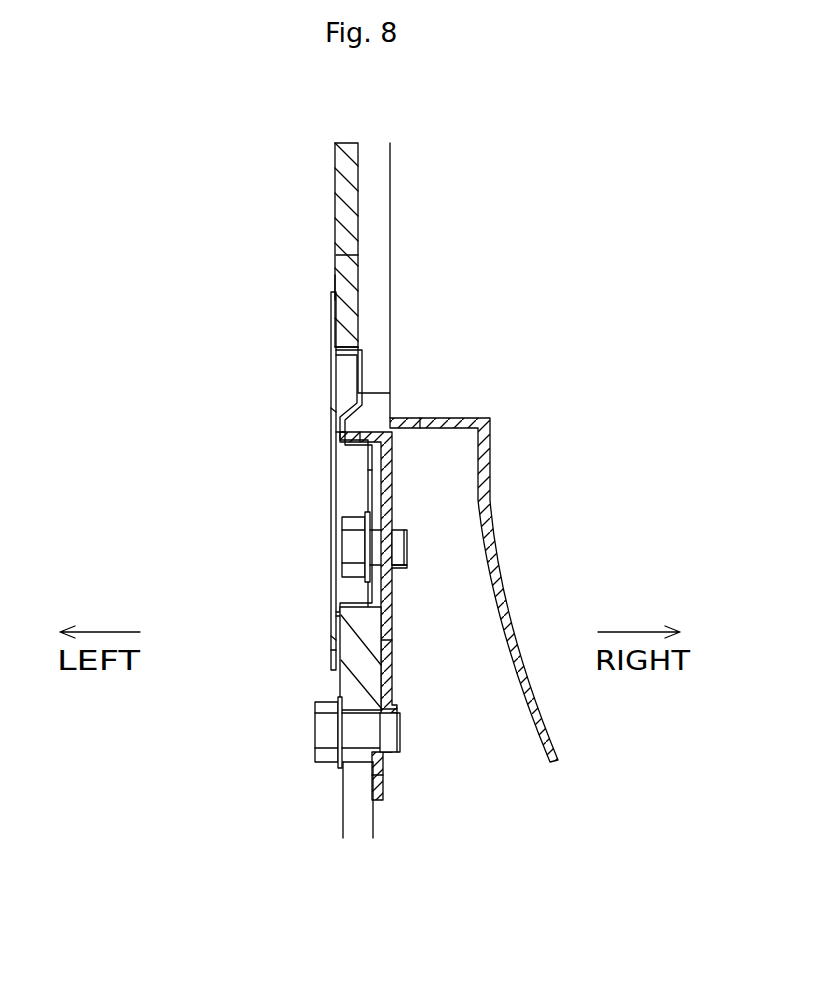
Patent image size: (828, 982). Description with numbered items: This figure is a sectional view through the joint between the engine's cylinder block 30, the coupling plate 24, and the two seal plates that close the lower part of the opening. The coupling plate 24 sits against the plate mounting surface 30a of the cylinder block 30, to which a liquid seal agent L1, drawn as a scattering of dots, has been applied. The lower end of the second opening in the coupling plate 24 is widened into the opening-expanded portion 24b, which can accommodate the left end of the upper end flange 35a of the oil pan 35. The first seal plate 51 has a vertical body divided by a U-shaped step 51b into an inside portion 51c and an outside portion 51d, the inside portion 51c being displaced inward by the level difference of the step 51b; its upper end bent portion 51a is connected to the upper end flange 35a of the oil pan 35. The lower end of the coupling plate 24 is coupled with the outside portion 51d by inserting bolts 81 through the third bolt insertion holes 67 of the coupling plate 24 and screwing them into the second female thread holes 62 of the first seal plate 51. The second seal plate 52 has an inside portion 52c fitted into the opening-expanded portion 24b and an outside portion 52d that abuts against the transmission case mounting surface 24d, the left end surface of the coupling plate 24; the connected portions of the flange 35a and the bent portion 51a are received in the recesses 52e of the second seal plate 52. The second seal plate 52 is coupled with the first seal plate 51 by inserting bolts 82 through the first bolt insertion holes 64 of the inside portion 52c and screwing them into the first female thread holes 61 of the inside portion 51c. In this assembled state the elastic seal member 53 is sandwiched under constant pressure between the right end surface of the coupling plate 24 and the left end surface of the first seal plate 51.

The cylinder block 30 is at (406, 148).
The coupling plate 24 is at (345, 203).
The plate mounting surface 30a is at (340, 262).
The transmission case mounting surface 24d is at (340, 280).
The opening-expanded portion 24b is at (350, 345).
The second seal plate 52 is at (330, 335).
The liquid seal agent L1 is at (335, 410).
The recess 52e is at (335, 437).
The inside portion 52c is at (368, 490).
The outside portion 52d is at (335, 660).
The oil pan 35 is at (535, 720).
The upper end flange 35a is at (407, 418).
The first seal plate 51 is at (410, 805).
The upper end bent portion 51a is at (385, 440).
The step 51b is at (393, 708).
The inside portion 51c is at (383, 645).
The outside portion 51d is at (372, 755).
The elastic seal member 53 is at (375, 650).
The bolt 82 is at (350, 545).
The first bolt insertion hole 64 is at (385, 535).
The first female thread hole 61 is at (400, 568).
The bolt 81 is at (330, 737).
The second female thread hole 62 is at (400, 755).
The third bolt insertion hole 67 is at (372, 765).